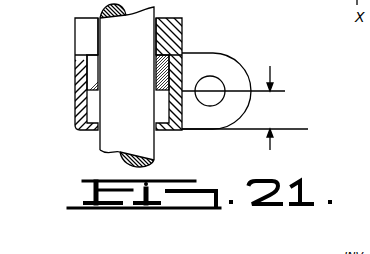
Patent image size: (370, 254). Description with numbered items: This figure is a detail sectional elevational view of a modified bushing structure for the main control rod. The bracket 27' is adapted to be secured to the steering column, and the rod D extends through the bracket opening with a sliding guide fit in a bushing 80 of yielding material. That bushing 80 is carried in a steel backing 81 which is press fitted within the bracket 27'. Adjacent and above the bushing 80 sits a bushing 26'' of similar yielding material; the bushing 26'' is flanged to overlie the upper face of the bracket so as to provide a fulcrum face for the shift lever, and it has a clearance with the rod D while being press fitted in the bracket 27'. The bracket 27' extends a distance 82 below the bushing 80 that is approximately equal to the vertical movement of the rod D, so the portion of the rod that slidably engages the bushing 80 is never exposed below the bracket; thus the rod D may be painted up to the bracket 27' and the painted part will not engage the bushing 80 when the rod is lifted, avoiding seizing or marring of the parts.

The bushing 26'' is at (156, 70).
The bracket 27' is at (156, 70).
The steel backing 81 is at (88, 57).
The bushing 80 is at (100, 78).
The distance 82 is at (245, 101).
The rod D is at (110, 152).